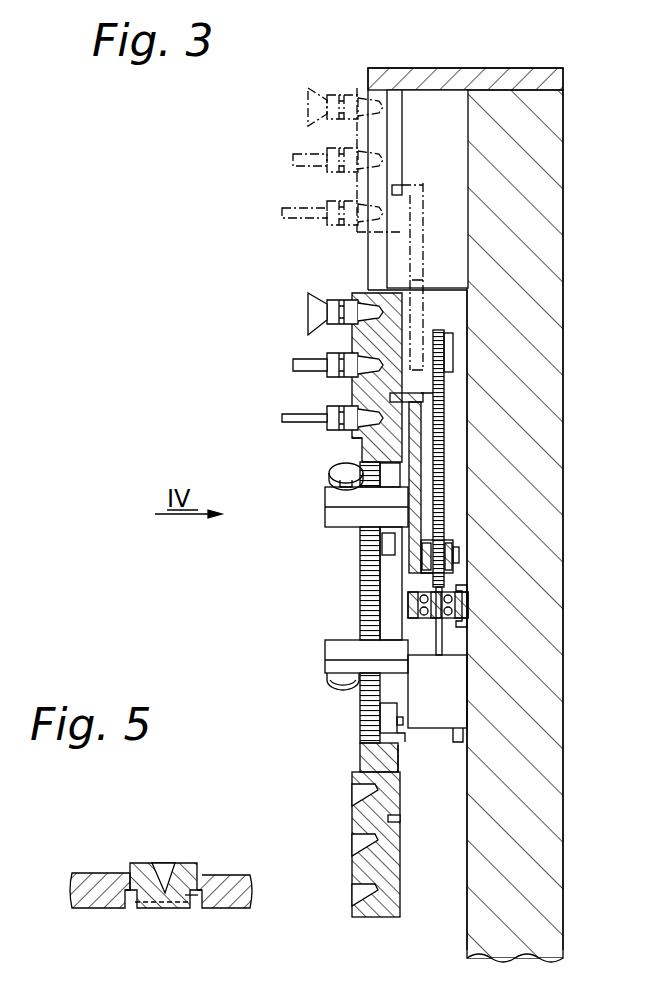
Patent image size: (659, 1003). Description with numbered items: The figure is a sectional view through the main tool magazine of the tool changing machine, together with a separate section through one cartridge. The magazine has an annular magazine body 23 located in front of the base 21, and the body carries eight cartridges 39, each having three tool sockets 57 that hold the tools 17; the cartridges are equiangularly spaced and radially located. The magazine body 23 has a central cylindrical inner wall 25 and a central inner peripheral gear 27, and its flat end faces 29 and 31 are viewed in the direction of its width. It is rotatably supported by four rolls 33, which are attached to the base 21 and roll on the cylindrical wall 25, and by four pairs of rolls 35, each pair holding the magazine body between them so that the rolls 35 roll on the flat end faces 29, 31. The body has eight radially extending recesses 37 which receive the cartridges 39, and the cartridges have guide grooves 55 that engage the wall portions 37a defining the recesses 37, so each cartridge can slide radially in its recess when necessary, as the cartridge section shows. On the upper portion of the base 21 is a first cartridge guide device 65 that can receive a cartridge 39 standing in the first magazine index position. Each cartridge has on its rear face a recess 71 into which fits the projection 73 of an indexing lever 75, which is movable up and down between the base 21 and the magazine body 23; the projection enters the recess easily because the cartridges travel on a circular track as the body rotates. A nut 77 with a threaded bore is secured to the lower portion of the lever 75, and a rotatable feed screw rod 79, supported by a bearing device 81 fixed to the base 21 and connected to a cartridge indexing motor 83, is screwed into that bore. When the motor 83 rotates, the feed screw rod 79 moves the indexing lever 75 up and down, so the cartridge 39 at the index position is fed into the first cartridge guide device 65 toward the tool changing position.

In FIG. 3, the tools 17 is at (308, 221).
In FIG. 3, the base 21 is at (536, 866).
In FIG. 3, the magazine body 23 is at (360, 450).
In FIG. 5, the magazine body 23 is at (228, 910).
In FIG. 3, the central cylindrical inner wall 25 is at (400, 740).
In FIG. 3, the central inner peripheral gear 27 is at (362, 566).
In FIG. 3, the flat end face 29 is at (400, 765).
In FIG. 3, the flat end face 31 is at (362, 755).
In FIG. 3, the rolls 33 is at (393, 541).
In FIG. 3, the pairs of rolls 35 is at (345, 480).
In FIG. 5, the recesses 37 is at (130, 912).
In FIG. 5, the wall portions 37a is at (125, 872).
In FIG. 3, the cartridges 39 is at (355, 344).
In FIG. 5, the cartridges 39 is at (150, 862).
In FIG. 5, the guide grooves 55 is at (200, 872).
In FIG. 3, the tool sockets 57 is at (350, 905).
In FIG. 5, the tool sockets 57 is at (165, 865).
In FIG. 3, the first cartridge guide device 65 is at (386, 261).
In FIG. 3, the recess 71 is at (395, 396).
In FIG. 3, the projection 73 is at (452, 378).
In FIG. 3, the indexing lever 75 is at (442, 417).
In FIG. 3, the nut 77 is at (460, 547).
In FIG. 3, the feed screw rod 79 is at (442, 450).
In FIG. 3, the bearing device 81 is at (468, 608).
In FIG. 3, the cartridge indexing motor 83 is at (455, 689).